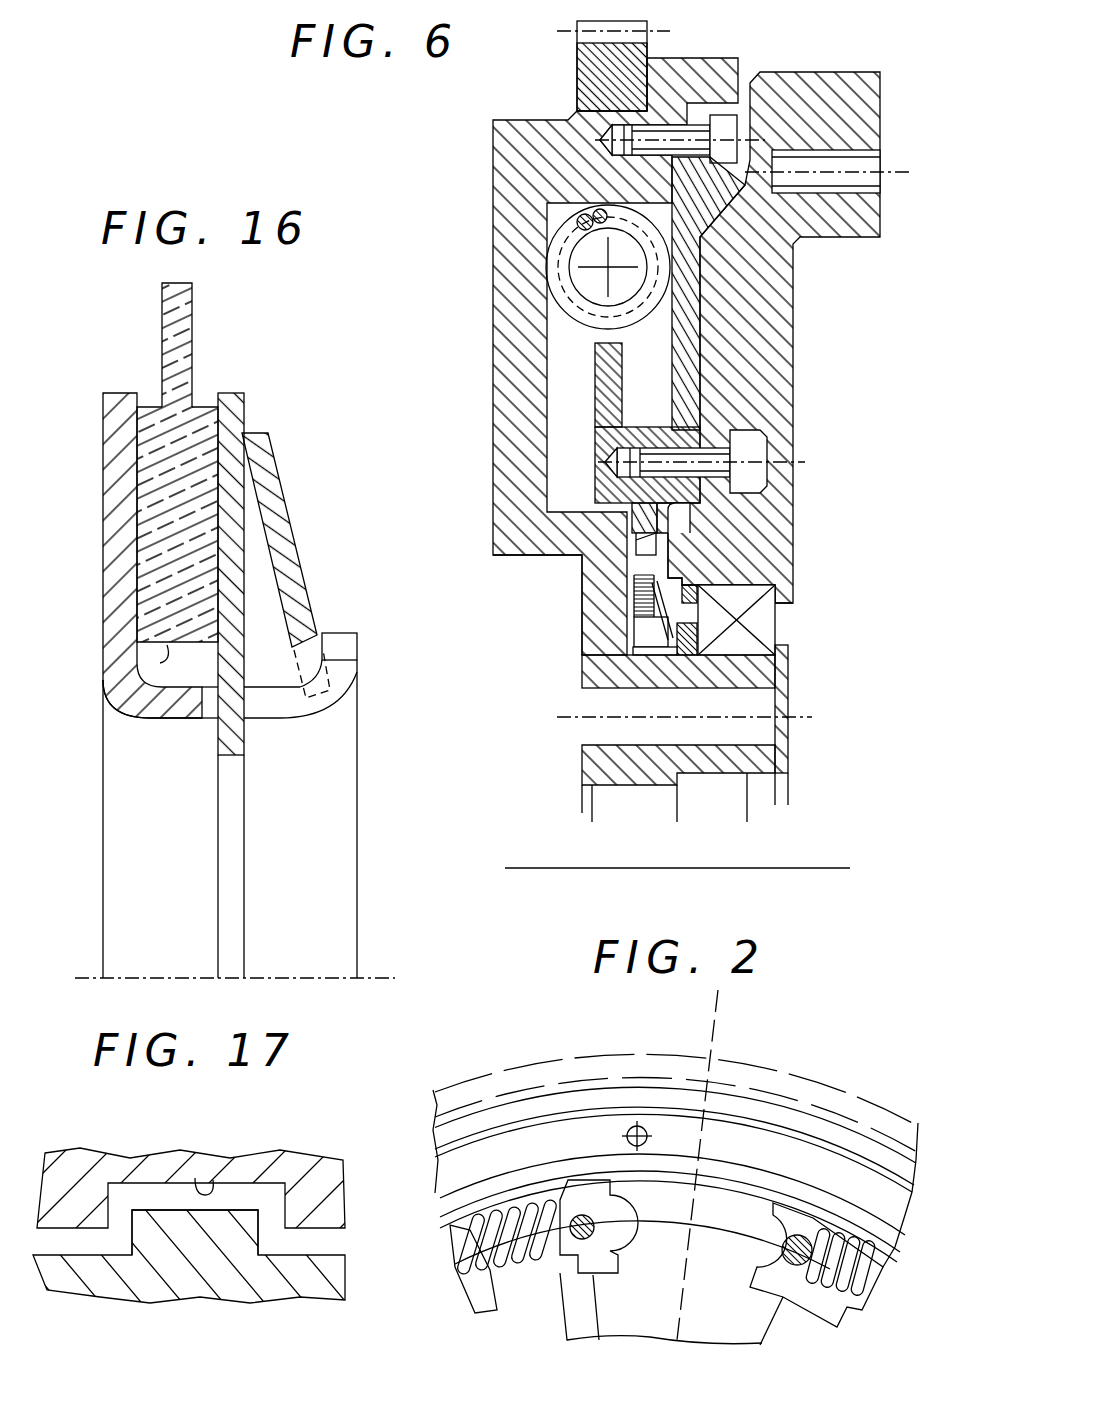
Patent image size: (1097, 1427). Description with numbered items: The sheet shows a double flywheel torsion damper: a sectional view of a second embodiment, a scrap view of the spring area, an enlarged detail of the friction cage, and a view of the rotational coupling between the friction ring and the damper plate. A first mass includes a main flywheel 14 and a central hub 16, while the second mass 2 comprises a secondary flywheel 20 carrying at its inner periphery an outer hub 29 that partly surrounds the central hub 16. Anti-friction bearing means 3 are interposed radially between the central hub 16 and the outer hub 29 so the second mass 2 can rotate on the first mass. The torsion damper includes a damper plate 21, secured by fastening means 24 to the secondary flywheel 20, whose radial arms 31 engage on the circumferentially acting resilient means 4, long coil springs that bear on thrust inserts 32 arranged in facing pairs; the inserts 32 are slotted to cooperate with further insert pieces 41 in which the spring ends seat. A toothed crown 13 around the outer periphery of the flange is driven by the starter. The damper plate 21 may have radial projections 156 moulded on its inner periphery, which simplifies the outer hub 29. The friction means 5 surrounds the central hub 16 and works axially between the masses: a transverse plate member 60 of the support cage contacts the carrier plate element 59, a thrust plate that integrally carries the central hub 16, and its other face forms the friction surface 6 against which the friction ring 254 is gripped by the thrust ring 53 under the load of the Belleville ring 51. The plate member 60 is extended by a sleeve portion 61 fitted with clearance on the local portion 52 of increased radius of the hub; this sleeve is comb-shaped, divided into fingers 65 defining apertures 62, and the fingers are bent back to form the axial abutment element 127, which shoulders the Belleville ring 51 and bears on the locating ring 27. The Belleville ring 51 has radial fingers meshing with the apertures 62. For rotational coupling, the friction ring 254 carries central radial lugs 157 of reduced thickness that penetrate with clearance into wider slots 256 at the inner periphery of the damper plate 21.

In FIG. 6, the main flywheel 14 is at (510, 140).
In FIG. 6, the circumferentially acting resilient means 4 is at (556, 260).
In FIG. 2, the circumferentially acting resilient means 4 is at (503, 1297).
In FIG. 6, the second mass 2 is at (783, 337).
In FIG. 6, the damper plate 21 is at (607, 383).
In FIG. 17, the damper plate 21 is at (297, 1160).
In FIG. 6, the secondary flywheel 20 is at (783, 337).
In FIG. 6, the fastening means 24 is at (753, 447).
In FIG. 6, the radial projections 156 is at (693, 507).
In FIG. 6, the outer hub 29 is at (770, 553).
In FIG. 6, the carrier plate element 59 is at (593, 587).
In FIG. 6, the anti-friction bearing means 3 is at (797, 623).
In FIG. 6, the friction means 5 is at (620, 650).
In FIG. 6, the local portion of increased radius 52 is at (667, 657).
In FIG. 6, the locating ring 27 is at (705, 672).
In FIG. 6, the central hub 16 is at (598, 758).
In FIG. 16, the central radial lugs 157 is at (167, 327).
In FIG. 17, the central radial lugs 157 is at (275, 1232).
In FIG. 16, the thrust ring 53 is at (233, 417).
In FIG. 16, the friction surface 6 is at (150, 456).
In FIG. 16, the Belleville ring 51 is at (277, 530).
In FIG. 16, the transverse plate member 60 is at (113, 560).
In FIG. 16, the fingers 65 is at (340, 633).
In FIG. 16, the friction ring 254 is at (167, 645).
In FIG. 17, the friction ring 254 is at (107, 1280).
In FIG. 16, the axial abutment element 127 is at (315, 657).
In FIG. 16, the apertures 62 is at (282, 705).
In FIG. 16, the sleeve portion 61 is at (137, 720).
In FIG. 17, the slots 256 is at (200, 1183).
In FIG. 2, the thrust inserts 32 is at (585, 1190).
In FIG. 2, the radial arms 31 is at (733, 1197).
In FIG. 2, the toothed crown 13 is at (863, 1101).
In FIG. 2, the further insert pieces 41 is at (565, 1275).